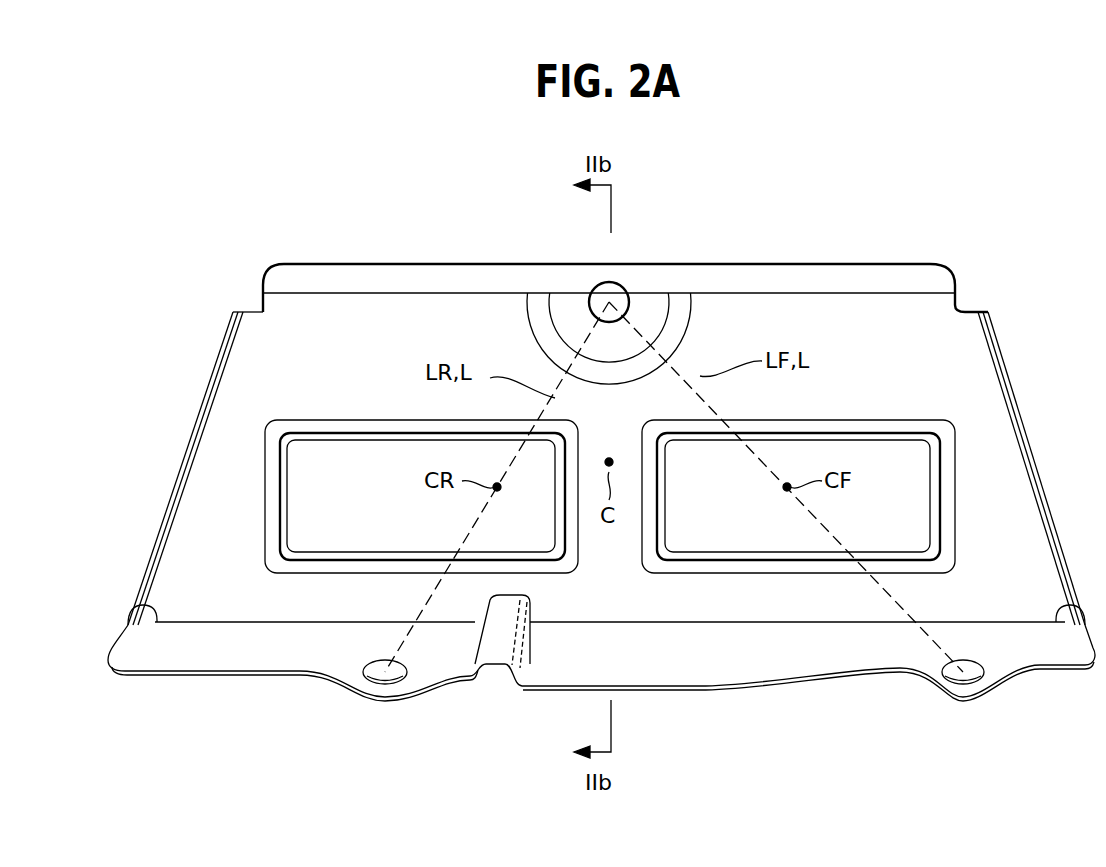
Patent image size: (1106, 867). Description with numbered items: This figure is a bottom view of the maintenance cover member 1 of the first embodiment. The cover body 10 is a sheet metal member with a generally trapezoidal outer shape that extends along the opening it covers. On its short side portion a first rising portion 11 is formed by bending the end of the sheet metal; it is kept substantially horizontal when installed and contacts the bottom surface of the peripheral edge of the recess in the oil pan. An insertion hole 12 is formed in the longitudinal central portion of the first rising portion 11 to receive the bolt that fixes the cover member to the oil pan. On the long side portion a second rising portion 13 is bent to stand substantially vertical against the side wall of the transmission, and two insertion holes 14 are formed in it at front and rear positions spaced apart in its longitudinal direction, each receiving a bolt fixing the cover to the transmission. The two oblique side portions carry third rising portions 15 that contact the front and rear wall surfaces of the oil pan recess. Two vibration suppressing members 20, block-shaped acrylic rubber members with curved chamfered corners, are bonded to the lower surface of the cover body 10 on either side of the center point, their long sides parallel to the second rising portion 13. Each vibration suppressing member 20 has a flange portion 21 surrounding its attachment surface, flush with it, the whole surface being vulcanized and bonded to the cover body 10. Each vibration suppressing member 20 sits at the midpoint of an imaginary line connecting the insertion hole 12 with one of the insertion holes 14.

The maintenance cover member 1 is at (842, 194).
The cover body 10 is at (872, 330).
The first rising portion 11 is at (738, 284).
The insertion hole 12 is at (630, 296).
The second rising portion 13 is at (756, 655).
The insertion holes 14 is at (383, 685).
The third rising portions 15 is at (193, 424).
The vibration suppressing member 20 is at (340, 468).
The flange portion 21 is at (388, 425).